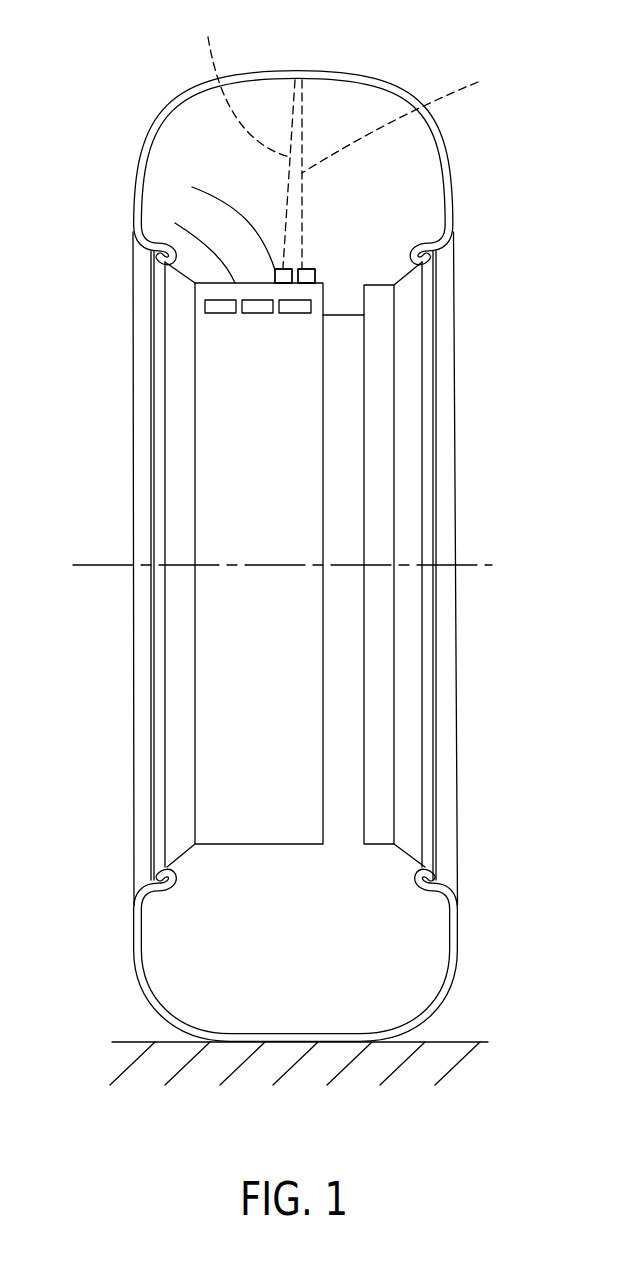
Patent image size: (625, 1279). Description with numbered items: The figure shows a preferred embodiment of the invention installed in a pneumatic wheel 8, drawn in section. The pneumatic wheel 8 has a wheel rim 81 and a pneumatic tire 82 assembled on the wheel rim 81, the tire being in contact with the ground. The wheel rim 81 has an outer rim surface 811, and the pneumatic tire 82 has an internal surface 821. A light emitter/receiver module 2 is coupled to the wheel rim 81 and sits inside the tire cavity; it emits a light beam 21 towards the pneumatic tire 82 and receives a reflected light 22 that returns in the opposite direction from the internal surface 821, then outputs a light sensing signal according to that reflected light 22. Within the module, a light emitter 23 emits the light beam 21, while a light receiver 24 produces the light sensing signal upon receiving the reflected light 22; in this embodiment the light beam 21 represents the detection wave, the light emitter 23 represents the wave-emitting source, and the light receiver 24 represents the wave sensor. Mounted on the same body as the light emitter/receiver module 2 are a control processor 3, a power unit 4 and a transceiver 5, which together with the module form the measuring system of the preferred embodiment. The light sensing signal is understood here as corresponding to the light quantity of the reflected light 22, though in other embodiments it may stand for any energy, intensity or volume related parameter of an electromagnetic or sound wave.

The light emitter/receiver module 2 is at (320, 266).
The light beam 21 is at (405, 169).
The reflected light 22 is at (244, 136).
The light emitter 23 is at (322, 268).
The light receiver 24 is at (192, 187).
The control processor 3 is at (298, 314).
The power unit 4 is at (257, 314).
The transceiver 5 is at (220, 314).
The pneumatic wheel 8 is at (120, 980).
The wheel rim 81 is at (152, 478).
The outer rim surface 811 is at (175, 223).
The pneumatic tire 82 is at (182, 100).
The internal surface 821 is at (334, 100).